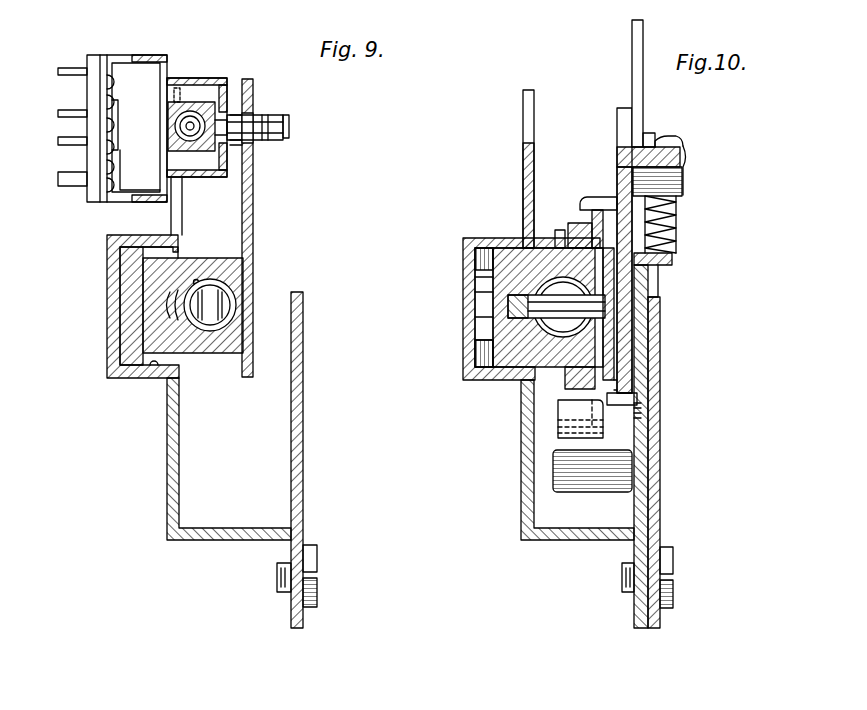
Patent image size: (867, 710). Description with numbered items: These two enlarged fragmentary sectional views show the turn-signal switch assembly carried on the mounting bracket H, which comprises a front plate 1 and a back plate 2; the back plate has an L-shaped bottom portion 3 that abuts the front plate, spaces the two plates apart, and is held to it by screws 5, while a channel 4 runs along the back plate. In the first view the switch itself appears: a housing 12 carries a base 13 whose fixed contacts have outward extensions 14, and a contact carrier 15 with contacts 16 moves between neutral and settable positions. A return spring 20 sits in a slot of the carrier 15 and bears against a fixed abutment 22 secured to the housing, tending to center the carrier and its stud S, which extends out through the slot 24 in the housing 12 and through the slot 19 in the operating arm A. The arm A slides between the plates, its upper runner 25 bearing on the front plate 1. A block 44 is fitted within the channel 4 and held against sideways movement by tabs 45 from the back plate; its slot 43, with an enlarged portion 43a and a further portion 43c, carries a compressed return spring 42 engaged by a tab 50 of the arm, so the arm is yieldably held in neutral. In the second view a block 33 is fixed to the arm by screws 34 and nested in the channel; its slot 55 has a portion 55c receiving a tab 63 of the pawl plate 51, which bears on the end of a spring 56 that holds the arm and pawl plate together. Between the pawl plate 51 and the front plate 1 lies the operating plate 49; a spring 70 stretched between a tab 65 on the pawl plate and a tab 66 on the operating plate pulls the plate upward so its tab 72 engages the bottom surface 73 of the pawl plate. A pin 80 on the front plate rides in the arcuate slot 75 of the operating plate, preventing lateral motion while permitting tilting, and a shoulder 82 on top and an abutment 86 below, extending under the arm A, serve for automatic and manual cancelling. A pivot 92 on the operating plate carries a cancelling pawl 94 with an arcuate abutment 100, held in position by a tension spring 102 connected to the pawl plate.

In FIG. 9, the front plate 1 is at (303, 390).
In FIG. 10, the front plate 1 is at (660, 466).
In FIG. 9, the back plate 2 is at (167, 440).
In FIG. 10, the back plate 2 is at (521, 465).
In FIG. 9, the L-shaped bottom portion 3 is at (224, 540).
In FIG. 10, the L-shaped bottom portion 3 is at (586, 540).
In FIG. 9, the channel 4 is at (110, 242).
In FIG. 10, the channel 4 is at (470, 238).
In FIG. 9, the screws 5 is at (318, 558).
In FIG. 10, the screws 5 is at (675, 559).
In FIG. 9, the mounting bracket H is at (190, 478).
In FIG. 10, the mounting bracket H is at (549, 480).
In FIG. 9, the operating arm A is at (253, 216).
In FIG. 10, the operating arm A is at (580, 206).
In FIG. 9, the stud S is at (140, 74).
In FIG. 9, the housing 12 is at (191, 78).
In FIG. 9, the base 13 is at (97, 56).
In FIG. 9, the outward extensions of fixed contacts 14 is at (62, 114).
In FIG. 9, the contact carrier 15 is at (136, 182).
In FIG. 9, the contacts 16 is at (112, 176).
In FIG. 9, the slot in arm 19 is at (258, 118).
In FIG. 9, the return spring 20 is at (193, 112).
In FIG. 9, the fixed abutment 22 is at (192, 132).
In FIG. 9, the slot in housing 24 is at (254, 150).
In FIG. 9, the upper runner 25 is at (256, 112).
In FIG. 9, the return spring 42 is at (242, 285).
In FIG. 9, the slot 43 is at (234, 322).
In FIG. 9, the enlarged portion of slot 43a is at (199, 279).
In FIG. 9, the groove 43c is at (166, 303).
In FIG. 9, the block 44 is at (135, 340).
In FIG. 9, the tabs 45 is at (119, 276).
In FIG. 9, the tab 50 is at (207, 306).
In FIG. 10, the block 33 is at (482, 248).
In FIG. 10, the screws 34 is at (524, 192).
In FIG. 10, the operating plate 49 is at (642, 290).
In FIG. 10, the pawl plate 51 is at (664, 243).
In FIG. 10, the slot 55 is at (480, 342).
In FIG. 10, the portion of slot 55c is at (602, 283).
In FIG. 10, the spring 56 is at (480, 268).
In FIG. 10, the tab 63 is at (520, 302).
In FIG. 10, the tab 65 is at (686, 152).
In FIG. 10, the tab 66 is at (673, 258).
In FIG. 10, the spring 70 is at (678, 216).
In FIG. 10, the tab 72 is at (660, 432).
In FIG. 10, the bottom surface 73 is at (630, 400).
In FIG. 10, the arcuate slot 75 is at (660, 386).
In FIG. 10, the pin 80 is at (662, 366).
In FIG. 10, the shoulder 82 is at (648, 402).
In FIG. 10, the abutment 86 is at (602, 470).
In FIG. 10, the pivot 92 is at (648, 147).
In FIG. 10, the cancelling pawl 94 is at (632, 58).
In FIG. 10, the arcuate abutment 100 is at (683, 185).
In FIG. 10, the tension spring 102 is at (684, 140).